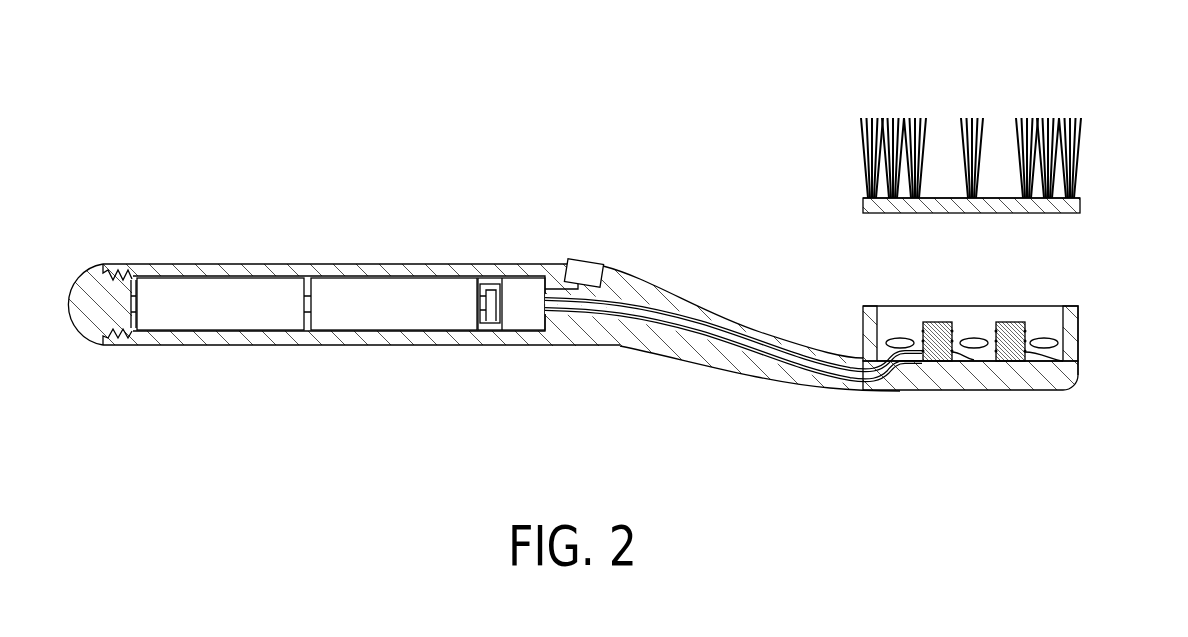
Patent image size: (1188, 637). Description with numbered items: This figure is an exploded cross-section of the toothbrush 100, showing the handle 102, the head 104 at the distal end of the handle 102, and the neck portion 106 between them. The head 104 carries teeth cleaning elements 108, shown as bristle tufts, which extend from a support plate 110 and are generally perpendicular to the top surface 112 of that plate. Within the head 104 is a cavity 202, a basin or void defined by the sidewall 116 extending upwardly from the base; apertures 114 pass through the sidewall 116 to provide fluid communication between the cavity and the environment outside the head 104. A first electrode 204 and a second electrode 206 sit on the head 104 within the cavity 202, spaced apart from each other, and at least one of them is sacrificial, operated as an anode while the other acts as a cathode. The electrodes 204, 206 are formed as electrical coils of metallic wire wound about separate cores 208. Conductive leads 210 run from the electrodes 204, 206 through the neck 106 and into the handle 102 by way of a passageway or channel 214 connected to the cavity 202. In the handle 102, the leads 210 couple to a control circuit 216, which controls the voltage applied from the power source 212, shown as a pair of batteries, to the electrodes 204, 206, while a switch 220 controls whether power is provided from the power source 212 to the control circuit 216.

The toothbrush 100 is at (187, 207).
The handle 102 is at (225, 270).
The head 104 is at (1079, 402).
The neck portion 106 is at (675, 343).
The teeth cleaning elements 108 is at (1080, 137).
The support plate 110 is at (863, 205).
The top surface 112 is at (1005, 198).
The apertures 114 is at (983, 362).
The sidewall 116 is at (1078, 322).
The cavity 202 is at (888, 318).
The first electrode 204 is at (895, 372).
The second electrode 206 is at (1075, 362).
The cores 208 is at (1013, 328).
The conductive leads 210 is at (582, 307).
The power source 212 is at (285, 293).
The passageway or channel 214 is at (653, 303).
The control circuit 216 is at (516, 268).
The switch 220 is at (582, 257).